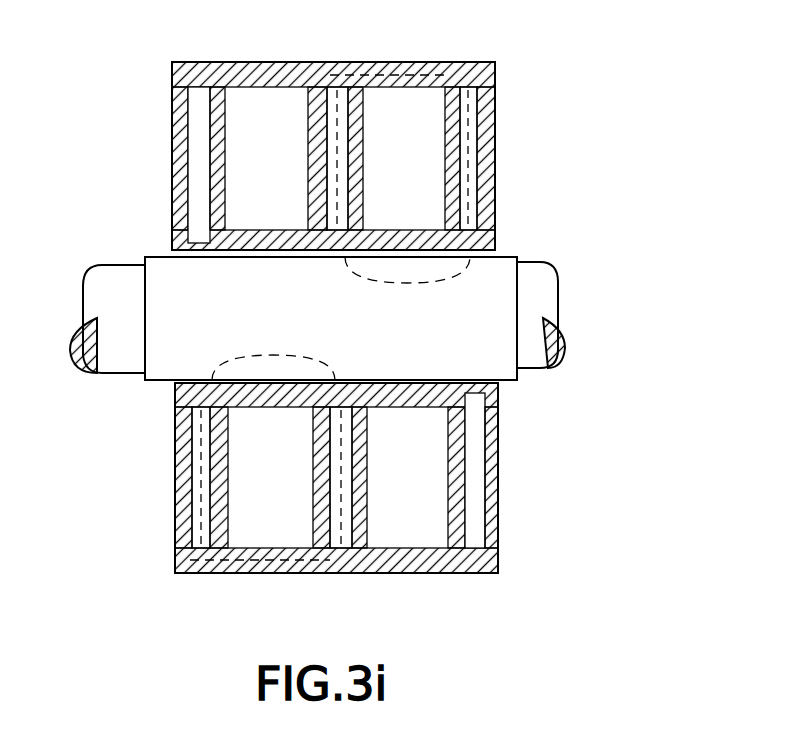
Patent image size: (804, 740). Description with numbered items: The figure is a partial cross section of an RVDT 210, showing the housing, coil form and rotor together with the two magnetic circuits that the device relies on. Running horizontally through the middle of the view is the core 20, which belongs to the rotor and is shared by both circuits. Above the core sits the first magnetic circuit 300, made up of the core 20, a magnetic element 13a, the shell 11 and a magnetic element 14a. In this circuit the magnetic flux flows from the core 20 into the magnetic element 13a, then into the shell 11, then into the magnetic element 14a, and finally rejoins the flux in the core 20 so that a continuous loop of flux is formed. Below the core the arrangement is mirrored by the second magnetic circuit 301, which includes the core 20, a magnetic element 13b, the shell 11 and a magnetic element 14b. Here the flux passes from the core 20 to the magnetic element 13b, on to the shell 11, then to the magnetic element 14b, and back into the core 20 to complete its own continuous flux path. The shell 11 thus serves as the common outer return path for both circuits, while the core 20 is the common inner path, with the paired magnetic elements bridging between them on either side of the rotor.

The shell 11 is at (432, 65).
The magnetic element 13a is at (328, 62).
The magnetic element 13b is at (345, 550).
The magnetic element 14a is at (493, 60).
The magnetic element 14b is at (197, 547).
The core 20 is at (495, 270).
The RVDT 210 is at (354, 315).
The first magnetic circuit 300 is at (380, 125).
The second magnetic circuit 301 is at (263, 507).